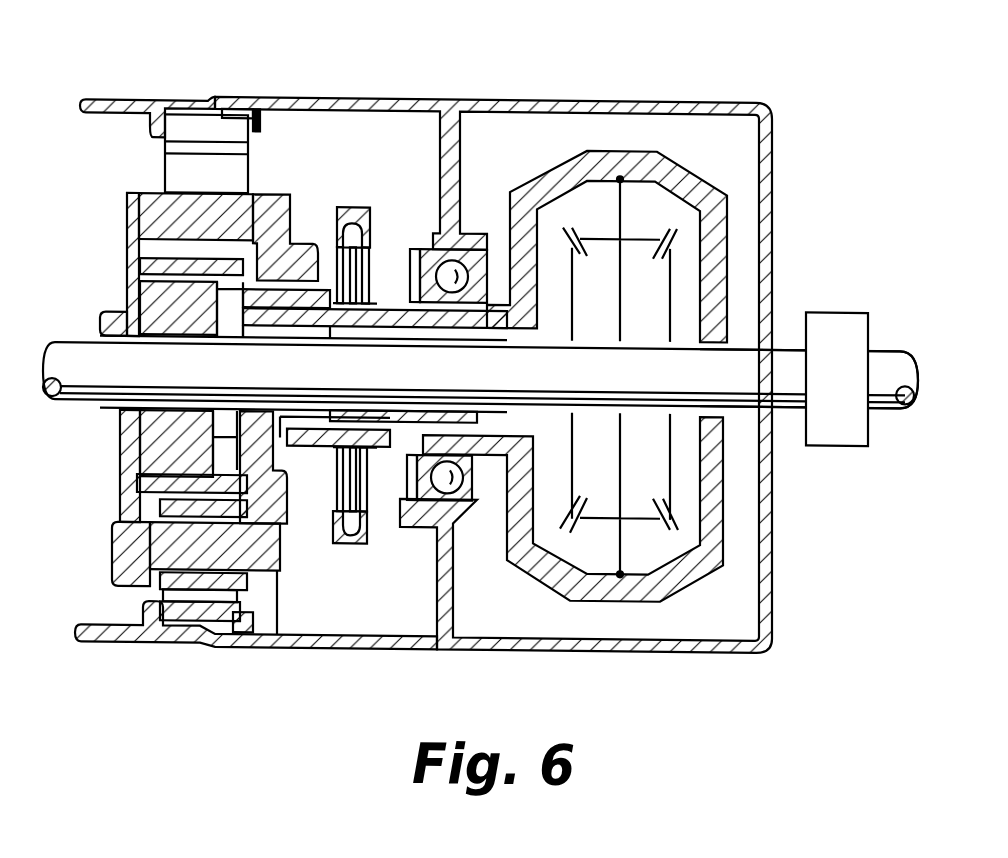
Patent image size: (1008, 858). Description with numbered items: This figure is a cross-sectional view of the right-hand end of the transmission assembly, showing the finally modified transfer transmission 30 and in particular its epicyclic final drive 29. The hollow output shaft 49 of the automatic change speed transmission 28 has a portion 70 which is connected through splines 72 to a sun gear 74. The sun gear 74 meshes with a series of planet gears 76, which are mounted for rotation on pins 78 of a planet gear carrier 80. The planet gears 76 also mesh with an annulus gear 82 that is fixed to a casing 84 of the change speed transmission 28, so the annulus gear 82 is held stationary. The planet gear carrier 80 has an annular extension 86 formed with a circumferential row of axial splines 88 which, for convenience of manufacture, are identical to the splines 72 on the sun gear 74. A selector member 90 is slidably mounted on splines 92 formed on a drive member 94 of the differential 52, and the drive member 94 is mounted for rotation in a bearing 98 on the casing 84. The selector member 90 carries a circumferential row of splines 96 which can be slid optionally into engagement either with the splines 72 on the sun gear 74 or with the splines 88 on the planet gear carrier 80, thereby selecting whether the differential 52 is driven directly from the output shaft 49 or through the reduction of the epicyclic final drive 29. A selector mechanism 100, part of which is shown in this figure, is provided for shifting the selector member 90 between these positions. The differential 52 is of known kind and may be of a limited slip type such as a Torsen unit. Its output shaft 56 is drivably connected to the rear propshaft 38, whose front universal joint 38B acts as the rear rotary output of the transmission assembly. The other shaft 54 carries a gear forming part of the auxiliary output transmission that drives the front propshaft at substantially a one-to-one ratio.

The automatic change speed transmission 28 is at (100, 101).
The epicyclic final drive 29 is at (183, 185).
The transfer transmission 30 is at (463, 93).
The rear propshaft 38 is at (884, 358).
The universal joint 38B is at (840, 451).
The hollow output shaft 49 is at (105, 314).
The differential 52 is at (633, 138).
The shaft 54 is at (65, 368).
The shaft 56 is at (781, 368).
The portion 70 is at (180, 453).
The splines 72 is at (200, 321).
The sun gear 74 is at (163, 487).
The planet gears 76 is at (177, 517).
The pins 78 is at (163, 554).
The planet gear carrier 80 is at (287, 517).
The annulus gear 82 is at (227, 622).
The casing 84 is at (337, 650).
The annular extension 86 is at (303, 270).
The axial splines 88 is at (318, 285).
The selector member 90 is at (370, 235).
The splines 92 is at (293, 309).
The drive member 94 is at (491, 305).
The splines 96 is at (255, 288).
The bearing 98 is at (412, 528).
The selector mechanism 100 is at (355, 197).